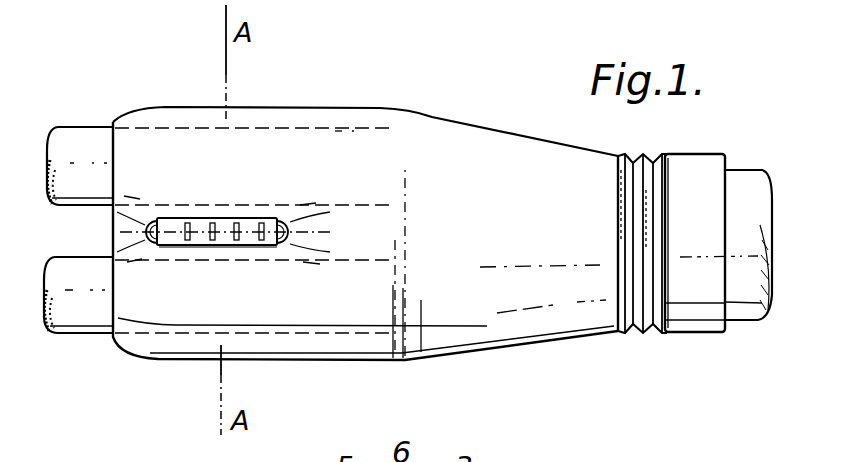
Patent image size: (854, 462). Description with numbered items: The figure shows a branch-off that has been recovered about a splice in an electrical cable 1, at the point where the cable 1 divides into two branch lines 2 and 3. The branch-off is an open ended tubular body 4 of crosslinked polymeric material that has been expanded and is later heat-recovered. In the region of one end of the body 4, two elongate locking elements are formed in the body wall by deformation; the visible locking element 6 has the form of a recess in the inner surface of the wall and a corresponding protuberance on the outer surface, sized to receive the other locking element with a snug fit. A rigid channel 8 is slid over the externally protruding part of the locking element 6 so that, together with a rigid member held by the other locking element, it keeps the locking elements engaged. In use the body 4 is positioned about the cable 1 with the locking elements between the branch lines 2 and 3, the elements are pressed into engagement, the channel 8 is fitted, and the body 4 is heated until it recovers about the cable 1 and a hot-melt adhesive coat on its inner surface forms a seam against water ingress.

The electrical cable 1 is at (745, 182).
The branch line 2 is at (84, 138).
The branch line 3 is at (95, 320).
The tubular body 4 is at (432, 138).
The locking element 6 is at (290, 237).
The rigid channel 8 is at (223, 243).